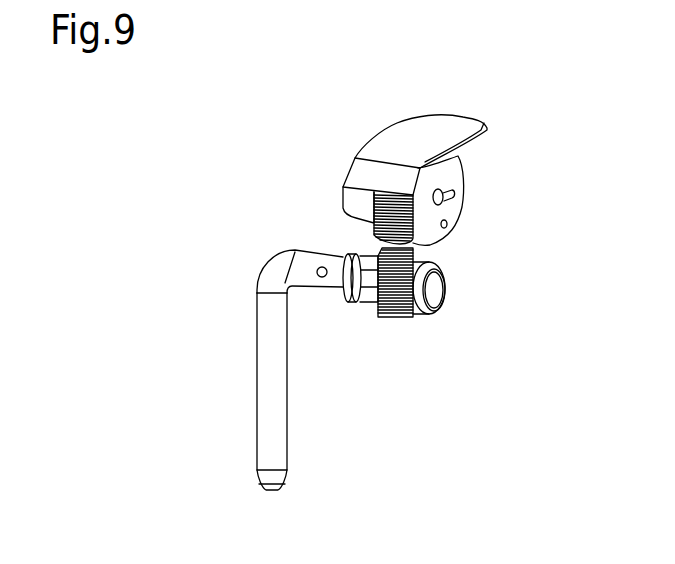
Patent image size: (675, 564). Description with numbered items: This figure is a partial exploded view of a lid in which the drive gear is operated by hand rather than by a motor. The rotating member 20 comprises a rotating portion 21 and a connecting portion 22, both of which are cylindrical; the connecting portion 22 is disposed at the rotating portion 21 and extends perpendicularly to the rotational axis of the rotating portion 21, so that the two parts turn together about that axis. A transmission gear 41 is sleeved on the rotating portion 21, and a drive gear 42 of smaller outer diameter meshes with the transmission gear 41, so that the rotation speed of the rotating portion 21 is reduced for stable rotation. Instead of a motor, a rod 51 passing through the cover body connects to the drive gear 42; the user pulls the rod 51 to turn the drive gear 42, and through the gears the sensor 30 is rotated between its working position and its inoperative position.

The rod 51 is at (466, 122).
The drive gear 42 is at (420, 233).
The transmission gear 41 is at (423, 260).
The rotating portion 21 is at (433, 288).
The rotating member 20 is at (373, 318).
The connecting portion 22 is at (283, 270).
The sensor 30 is at (278, 407).